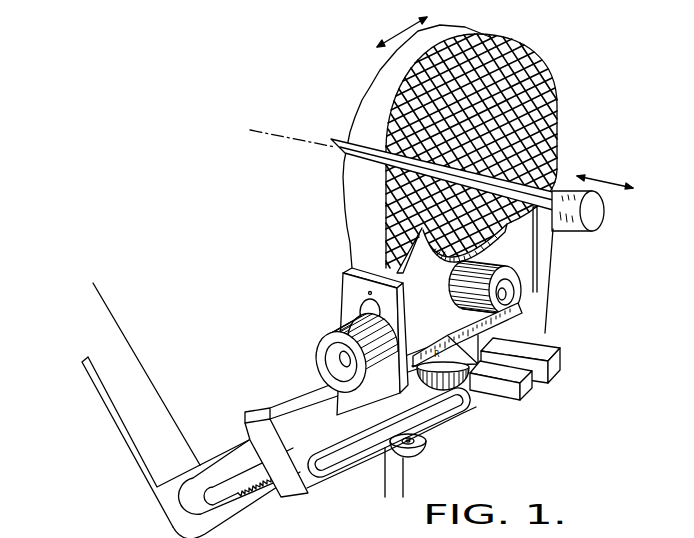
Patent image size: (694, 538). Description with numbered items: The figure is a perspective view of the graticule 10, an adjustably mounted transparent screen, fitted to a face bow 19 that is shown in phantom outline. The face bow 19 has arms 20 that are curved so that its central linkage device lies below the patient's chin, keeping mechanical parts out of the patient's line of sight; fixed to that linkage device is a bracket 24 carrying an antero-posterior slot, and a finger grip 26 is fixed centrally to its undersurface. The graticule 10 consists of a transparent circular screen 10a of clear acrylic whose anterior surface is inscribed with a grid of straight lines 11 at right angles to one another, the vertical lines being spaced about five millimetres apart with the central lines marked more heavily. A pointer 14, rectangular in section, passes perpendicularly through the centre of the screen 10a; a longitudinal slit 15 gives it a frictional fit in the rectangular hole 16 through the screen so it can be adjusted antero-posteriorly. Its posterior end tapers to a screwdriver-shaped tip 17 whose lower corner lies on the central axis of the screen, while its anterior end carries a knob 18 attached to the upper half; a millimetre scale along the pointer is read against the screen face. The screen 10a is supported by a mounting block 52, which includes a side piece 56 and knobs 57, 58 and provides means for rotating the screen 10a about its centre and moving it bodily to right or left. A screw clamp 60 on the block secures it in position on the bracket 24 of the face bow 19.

The graticule 10 is at (447, 139).
The transparent circular screen 10a is at (383, 63).
The grid of straight lines 11 is at (523, 87).
The pointer 14 is at (340, 148).
The longitudinal slit 15 is at (469, 148).
The rectangular hole 16 is at (380, 223).
The screwdriver-shaped tip 17 is at (333, 140).
The knob 18 is at (583, 232).
The face bow 19 is at (124, 443).
The arms 20 is at (123, 363).
The bracket 24 is at (555, 368).
The finger grip 26 is at (404, 486).
The mounting block 52 is at (530, 296).
The side piece 56 is at (348, 302).
The knob 57 is at (513, 300).
The knob 58 is at (330, 360).
The screw clamp 60 is at (457, 377).